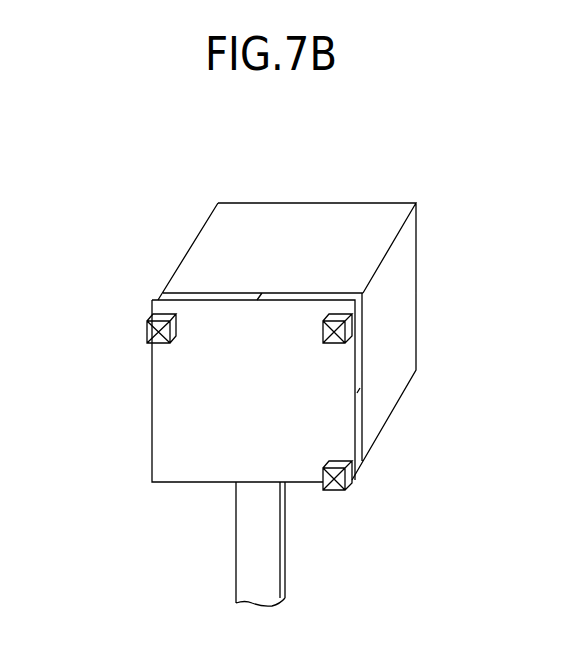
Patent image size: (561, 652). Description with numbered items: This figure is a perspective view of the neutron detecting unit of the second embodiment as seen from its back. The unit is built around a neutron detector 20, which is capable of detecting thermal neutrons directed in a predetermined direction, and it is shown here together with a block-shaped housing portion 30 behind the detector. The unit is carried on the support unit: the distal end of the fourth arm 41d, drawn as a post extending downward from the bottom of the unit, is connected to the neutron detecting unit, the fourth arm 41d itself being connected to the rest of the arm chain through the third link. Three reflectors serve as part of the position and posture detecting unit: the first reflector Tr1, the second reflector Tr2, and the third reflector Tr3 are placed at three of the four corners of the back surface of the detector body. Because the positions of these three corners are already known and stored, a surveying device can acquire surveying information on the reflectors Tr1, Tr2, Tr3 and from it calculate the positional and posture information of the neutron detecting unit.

The housing box 30 is at (192, 228).
The neutron detector 20 is at (149, 383).
The first reflector Tr1 is at (160, 318).
The second reflector Tr2 is at (345, 327).
The third reflector Tr3 is at (347, 483).
The fourth arm 41d is at (246, 542).